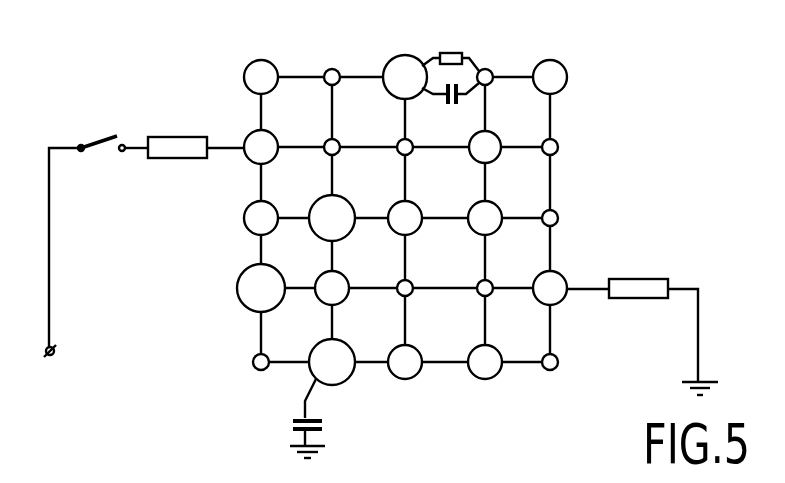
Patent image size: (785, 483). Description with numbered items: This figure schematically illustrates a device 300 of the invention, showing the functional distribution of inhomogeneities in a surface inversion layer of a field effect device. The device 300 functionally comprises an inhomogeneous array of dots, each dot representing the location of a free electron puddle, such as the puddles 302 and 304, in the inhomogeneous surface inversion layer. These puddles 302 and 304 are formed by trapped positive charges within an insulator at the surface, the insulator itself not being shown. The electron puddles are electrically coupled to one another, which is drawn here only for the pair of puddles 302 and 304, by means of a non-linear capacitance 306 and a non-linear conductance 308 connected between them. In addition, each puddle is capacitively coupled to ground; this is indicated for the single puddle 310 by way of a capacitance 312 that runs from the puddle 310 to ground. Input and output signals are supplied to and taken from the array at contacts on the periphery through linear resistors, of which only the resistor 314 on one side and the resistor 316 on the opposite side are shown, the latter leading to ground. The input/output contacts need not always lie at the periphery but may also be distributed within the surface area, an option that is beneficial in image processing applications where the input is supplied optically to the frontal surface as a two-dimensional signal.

The device 300 is at (172, 456).
The electron puddle 302 is at (394, 71).
The electron puddle 304 is at (487, 69).
The non-linear capacitance 306 is at (443, 101).
The non-linear conductance 308 is at (450, 50).
The puddle 310 is at (349, 371).
The capacitance 312 is at (326, 425).
The linear resistor 314 is at (173, 136).
The linear resistor 316 is at (630, 279).